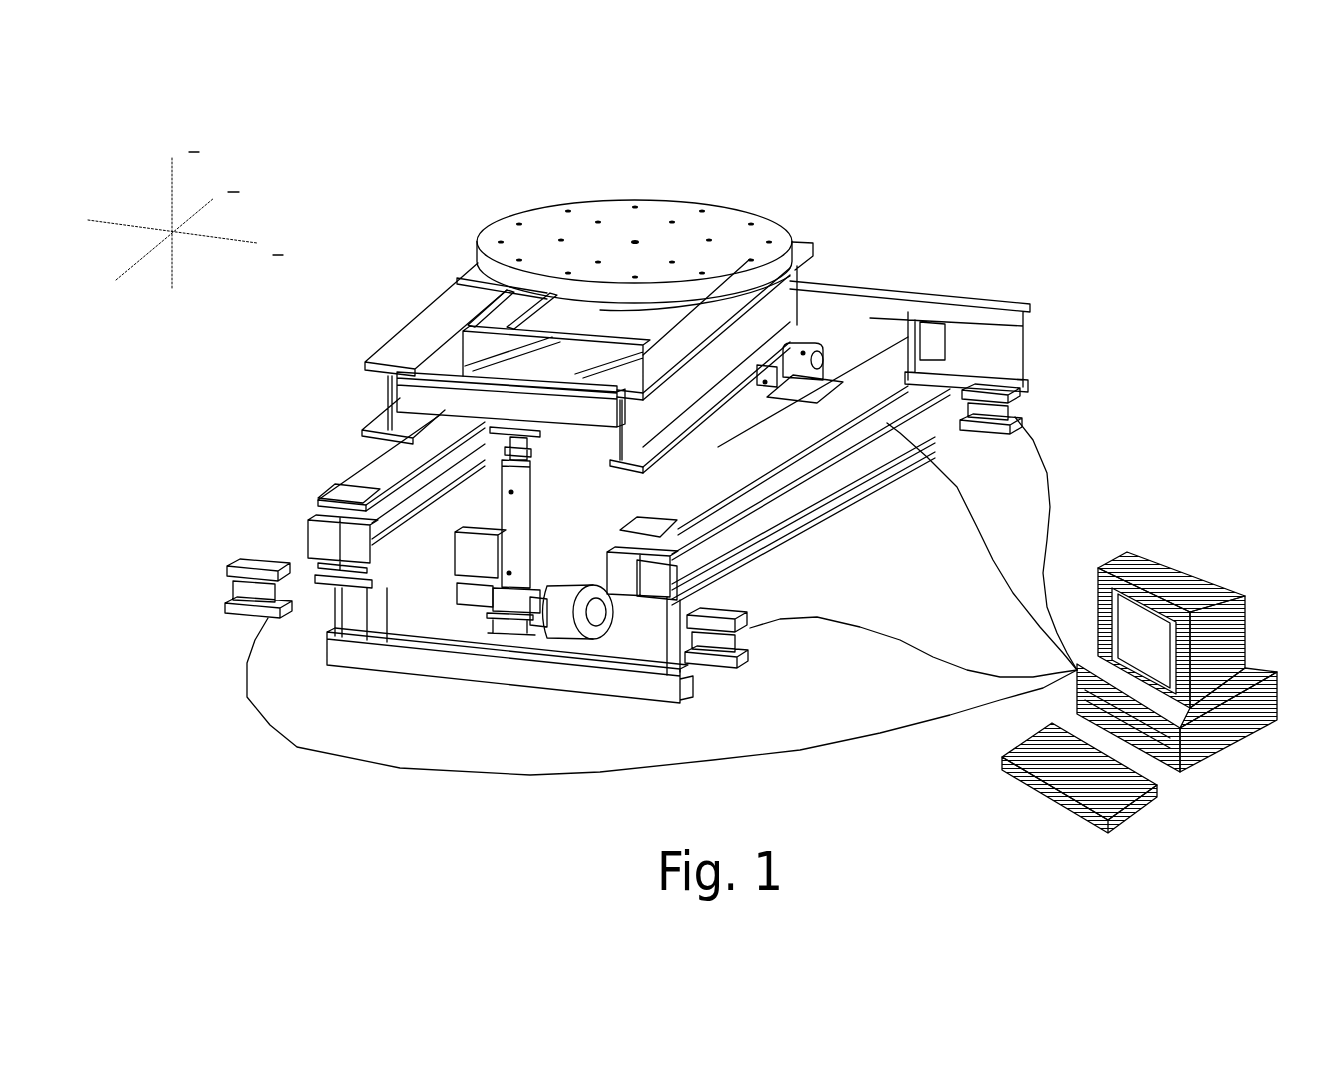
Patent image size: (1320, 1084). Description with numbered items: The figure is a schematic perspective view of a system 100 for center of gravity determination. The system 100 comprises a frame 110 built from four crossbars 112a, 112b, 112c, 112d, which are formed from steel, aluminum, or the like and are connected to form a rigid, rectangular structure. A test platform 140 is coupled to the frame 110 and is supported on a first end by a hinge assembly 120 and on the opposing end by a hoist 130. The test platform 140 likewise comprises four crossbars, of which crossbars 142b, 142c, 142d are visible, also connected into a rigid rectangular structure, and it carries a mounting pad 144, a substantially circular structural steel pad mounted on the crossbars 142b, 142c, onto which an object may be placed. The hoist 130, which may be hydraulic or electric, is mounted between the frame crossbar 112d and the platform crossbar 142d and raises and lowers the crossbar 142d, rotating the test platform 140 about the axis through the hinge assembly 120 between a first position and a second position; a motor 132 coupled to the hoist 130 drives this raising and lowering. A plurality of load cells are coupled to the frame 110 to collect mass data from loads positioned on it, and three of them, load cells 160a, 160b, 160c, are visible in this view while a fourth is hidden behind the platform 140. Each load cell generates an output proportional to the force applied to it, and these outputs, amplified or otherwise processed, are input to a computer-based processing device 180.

The system for center of gravity determination 100 is at (160, 74).
The frame 110 is at (1037, 278).
The crossbar 112a is at (997, 362).
The crossbar 112b is at (758, 505).
The crossbar 112c is at (370, 457).
The crossbar 112d is at (377, 653).
The hinge assembly 120 is at (824, 326).
The hoist 130 is at (530, 567).
The motor 132 is at (598, 630).
The test platform 140 is at (802, 184).
The crossbar 142b is at (632, 410).
The crossbar 142c is at (427, 330).
The crossbar 142d is at (560, 430).
The mounting pad 144 is at (563, 233).
The load cell 160a is at (1015, 408).
The load cell 160b is at (727, 672).
The load cell 160c is at (240, 590).
The computer-based processing device 180 is at (1149, 533).